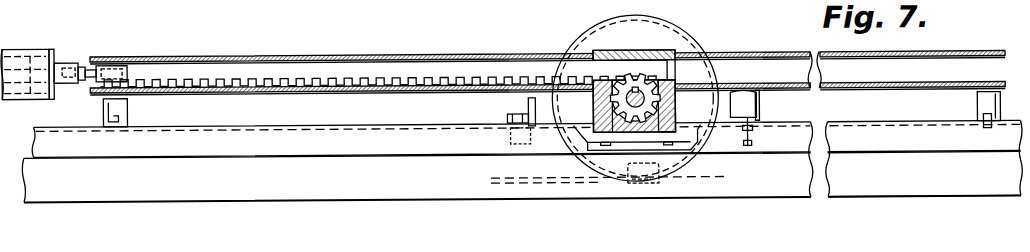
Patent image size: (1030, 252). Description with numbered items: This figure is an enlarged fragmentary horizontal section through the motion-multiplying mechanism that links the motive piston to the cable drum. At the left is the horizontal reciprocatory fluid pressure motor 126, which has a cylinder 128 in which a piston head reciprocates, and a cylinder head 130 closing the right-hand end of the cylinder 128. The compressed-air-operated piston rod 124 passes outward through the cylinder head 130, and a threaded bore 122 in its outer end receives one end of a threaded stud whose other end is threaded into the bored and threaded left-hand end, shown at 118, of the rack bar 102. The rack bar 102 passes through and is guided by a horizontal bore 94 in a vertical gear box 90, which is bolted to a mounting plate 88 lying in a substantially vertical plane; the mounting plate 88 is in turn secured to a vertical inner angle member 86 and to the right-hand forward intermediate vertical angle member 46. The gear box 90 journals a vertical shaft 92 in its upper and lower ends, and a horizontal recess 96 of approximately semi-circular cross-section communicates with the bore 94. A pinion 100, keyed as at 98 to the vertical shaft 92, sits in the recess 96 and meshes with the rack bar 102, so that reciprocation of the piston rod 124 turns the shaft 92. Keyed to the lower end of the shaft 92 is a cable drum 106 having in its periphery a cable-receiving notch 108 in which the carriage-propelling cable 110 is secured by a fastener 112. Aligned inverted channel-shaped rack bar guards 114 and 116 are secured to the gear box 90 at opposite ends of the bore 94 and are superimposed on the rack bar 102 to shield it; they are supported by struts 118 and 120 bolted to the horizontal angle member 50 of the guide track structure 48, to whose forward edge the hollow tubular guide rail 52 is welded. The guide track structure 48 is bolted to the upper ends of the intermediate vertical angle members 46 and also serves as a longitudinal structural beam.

The forward intermediate vertical angle member 46 is at (760, 111).
The guide track structure 48 is at (966, 202).
The horizontal angle member 50 is at (321, 131).
The hollow tubular guide rail 52 is at (795, 185).
The vertical inner angle member 86 is at (527, 110).
The mounting plate 88 is at (683, 138).
The vertical gear box 90 is at (677, 106).
The vertical shaft 92 is at (600, 118).
The horizontal bore 94 is at (673, 67).
The horizontal recess 96 is at (607, 91).
The key 98 is at (638, 92).
The pinion 100 is at (677, 79).
The rack bar 102 is at (470, 78).
The cable drum 106 is at (684, 33).
The cable-receiving notch 108 is at (655, 184).
The carriage-propelling cable 110 is at (557, 181).
The fastener 112 is at (621, 184).
The rack bar guard 114 is at (393, 57).
The rack bar guard 116 is at (826, 53).
The strut 118 is at (117, 66).
The strut 120 is at (129, 113).
The threaded bore 122 is at (70, 66).
The piston rod 124 is at (62, 62).
The fluid pressure motor 126 is at (18, 44).
The cylinder 128 is at (17, 100).
The cylinder head 130 is at (52, 52).